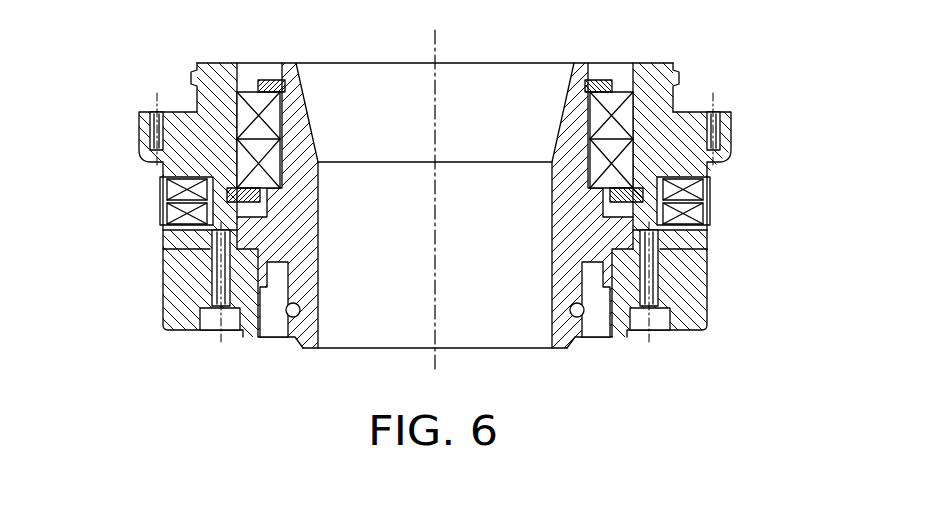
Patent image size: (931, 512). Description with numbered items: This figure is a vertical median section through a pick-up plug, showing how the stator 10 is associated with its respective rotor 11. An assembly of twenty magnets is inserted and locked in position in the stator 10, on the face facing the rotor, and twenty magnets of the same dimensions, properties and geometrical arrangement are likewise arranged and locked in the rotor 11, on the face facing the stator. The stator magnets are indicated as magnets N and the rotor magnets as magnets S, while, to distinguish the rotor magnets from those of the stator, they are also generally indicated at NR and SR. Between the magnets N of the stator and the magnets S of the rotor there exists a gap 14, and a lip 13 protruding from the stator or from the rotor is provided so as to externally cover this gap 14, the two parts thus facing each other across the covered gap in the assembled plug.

The stator 10 is at (656, 88).
The rotor 11 is at (697, 290).
The lip 13 is at (155, 198).
The gap 14 is at (158, 226).
The magnet S is at (158, 172).
The magnet N is at (706, 160).
The rotor magnet NR is at (172, 246).
The rotor magnet SR is at (703, 220).